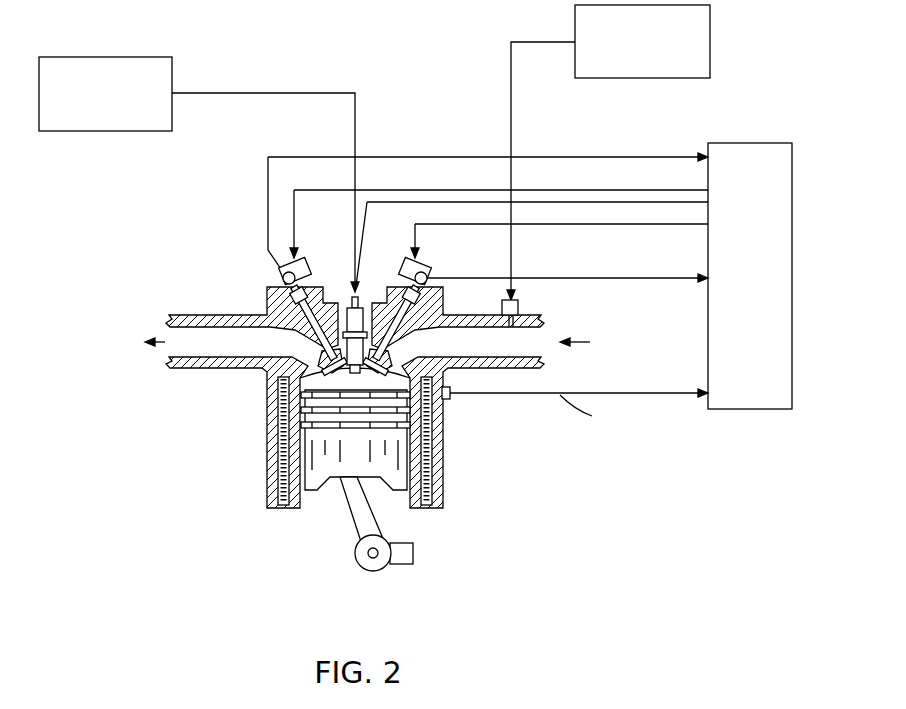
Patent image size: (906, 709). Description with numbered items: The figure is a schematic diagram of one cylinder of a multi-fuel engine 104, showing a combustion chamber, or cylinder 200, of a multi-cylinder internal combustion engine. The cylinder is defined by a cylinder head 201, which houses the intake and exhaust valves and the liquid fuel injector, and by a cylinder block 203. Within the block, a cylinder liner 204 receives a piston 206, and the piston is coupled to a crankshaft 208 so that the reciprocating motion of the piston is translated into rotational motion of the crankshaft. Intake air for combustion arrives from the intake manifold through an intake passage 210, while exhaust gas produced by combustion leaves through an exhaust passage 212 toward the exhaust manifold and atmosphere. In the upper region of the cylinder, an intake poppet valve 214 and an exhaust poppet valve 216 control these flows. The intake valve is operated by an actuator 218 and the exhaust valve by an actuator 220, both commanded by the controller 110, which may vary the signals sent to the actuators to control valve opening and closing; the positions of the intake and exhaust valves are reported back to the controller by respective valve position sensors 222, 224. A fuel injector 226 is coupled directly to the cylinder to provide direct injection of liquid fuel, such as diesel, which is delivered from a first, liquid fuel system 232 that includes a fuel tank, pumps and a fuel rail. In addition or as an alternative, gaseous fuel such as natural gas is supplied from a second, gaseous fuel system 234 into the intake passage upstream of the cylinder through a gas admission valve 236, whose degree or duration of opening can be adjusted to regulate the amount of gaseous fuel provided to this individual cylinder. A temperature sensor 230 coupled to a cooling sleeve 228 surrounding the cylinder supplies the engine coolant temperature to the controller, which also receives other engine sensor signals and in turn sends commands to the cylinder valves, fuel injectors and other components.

The engine 104 is at (388, 132).
The controller 110 is at (750, 276).
The cylinder 200 is at (355, 379).
The cylinder head 201 is at (220, 249).
The cylinder block 203 is at (492, 464).
The cylinder liner 204 is at (296, 497).
The piston 206 is at (340, 465).
The crankshaft 208 is at (392, 548).
The intake passage 210 is at (516, 397).
The exhaust passage 212 is at (190, 397).
The intake poppet valve 214 is at (404, 350).
The exhaust poppet valve 216 is at (318, 343).
The actuator 218 is at (409, 268).
The actuator 220 is at (295, 268).
The valve position sensor 222 is at (426, 280).
The valve position sensor 224 is at (283, 277).
The fuel injector 226 is at (350, 300).
The cooling sleeve 228 is at (430, 455).
The temperature sensor 230 is at (451, 398).
The liquid fuel system 232 is at (199, 174).
The gaseous fuel system 234 is at (608, 152).
The gas admission valve 236 is at (520, 305).